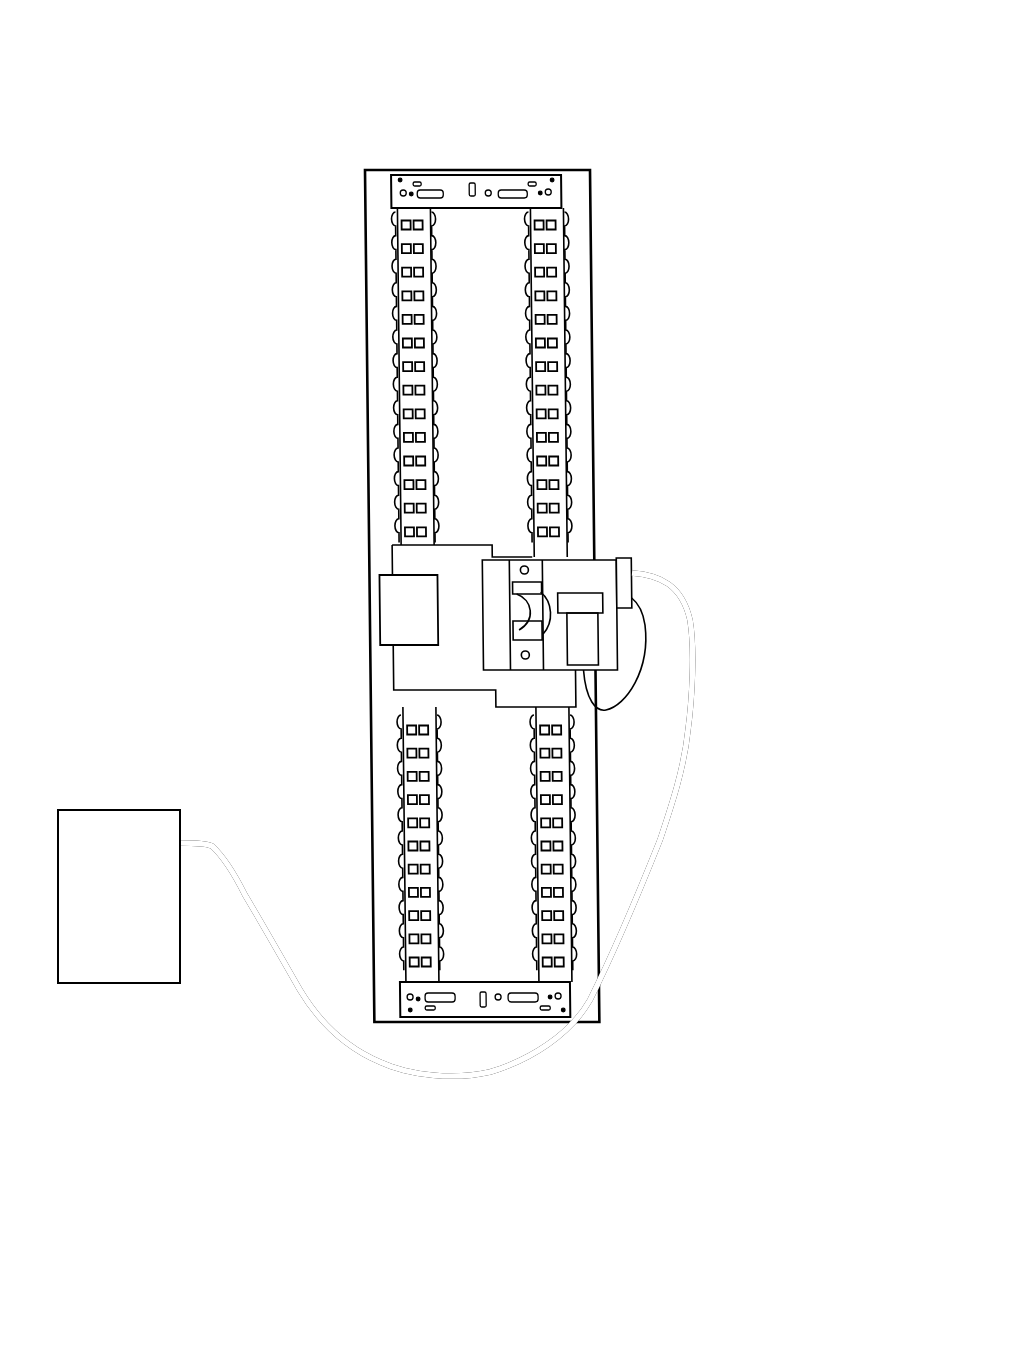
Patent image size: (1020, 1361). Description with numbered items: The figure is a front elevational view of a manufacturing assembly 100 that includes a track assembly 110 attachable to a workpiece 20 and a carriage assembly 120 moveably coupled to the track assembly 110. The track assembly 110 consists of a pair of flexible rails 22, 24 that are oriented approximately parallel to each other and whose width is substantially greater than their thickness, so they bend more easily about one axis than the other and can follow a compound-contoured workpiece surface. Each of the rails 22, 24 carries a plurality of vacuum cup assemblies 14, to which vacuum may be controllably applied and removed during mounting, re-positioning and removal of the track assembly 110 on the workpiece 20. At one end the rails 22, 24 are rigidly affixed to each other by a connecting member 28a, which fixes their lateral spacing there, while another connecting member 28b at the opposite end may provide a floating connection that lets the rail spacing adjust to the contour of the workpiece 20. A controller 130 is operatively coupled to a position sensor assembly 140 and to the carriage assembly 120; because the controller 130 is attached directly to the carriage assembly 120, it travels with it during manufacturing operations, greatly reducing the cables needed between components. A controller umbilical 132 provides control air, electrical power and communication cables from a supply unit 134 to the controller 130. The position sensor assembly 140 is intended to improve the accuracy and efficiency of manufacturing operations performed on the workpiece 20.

The manufacturing assembly 100 is at (584, 104).
The track assembly 110 is at (309, 258).
The workpiece 20 is at (577, 172).
The connecting member 28a is at (460, 1020).
The connecting member 28b is at (454, 177).
The flexible rail 22 is at (562, 318).
The flexible rail 24 is at (396, 347).
The vacuum cup assemblies 14 is at (392, 425).
The carriage assembly 120 is at (338, 676).
The position sensor assembly 140 is at (336, 596).
The controller 130 is at (653, 537).
The controller umbilical 132 is at (684, 745).
The supply unit 134 is at (130, 811).